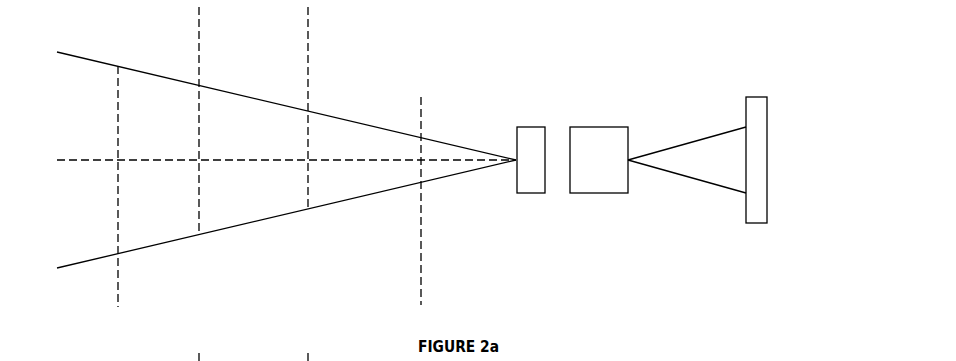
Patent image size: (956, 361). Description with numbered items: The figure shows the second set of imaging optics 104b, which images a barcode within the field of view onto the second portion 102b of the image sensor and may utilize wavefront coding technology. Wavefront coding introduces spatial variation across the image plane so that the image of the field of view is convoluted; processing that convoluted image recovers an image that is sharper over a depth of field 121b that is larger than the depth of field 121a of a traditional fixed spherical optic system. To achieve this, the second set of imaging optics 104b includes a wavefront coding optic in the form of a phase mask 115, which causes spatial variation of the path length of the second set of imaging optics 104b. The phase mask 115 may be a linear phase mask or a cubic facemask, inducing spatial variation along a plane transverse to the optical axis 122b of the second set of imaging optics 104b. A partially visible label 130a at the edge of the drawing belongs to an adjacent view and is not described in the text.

The second portion of the image sensor 102b is at (767, 124).
The second set of imaging optics 104b is at (628, 205).
The phase mask 115 is at (535, 127).
The depth of field 121a is at (308, 26).
The depth of field 121b is at (421, 281).
The optical axis 122b is at (102, 160).
The reference plane 130a is at (187, 360).